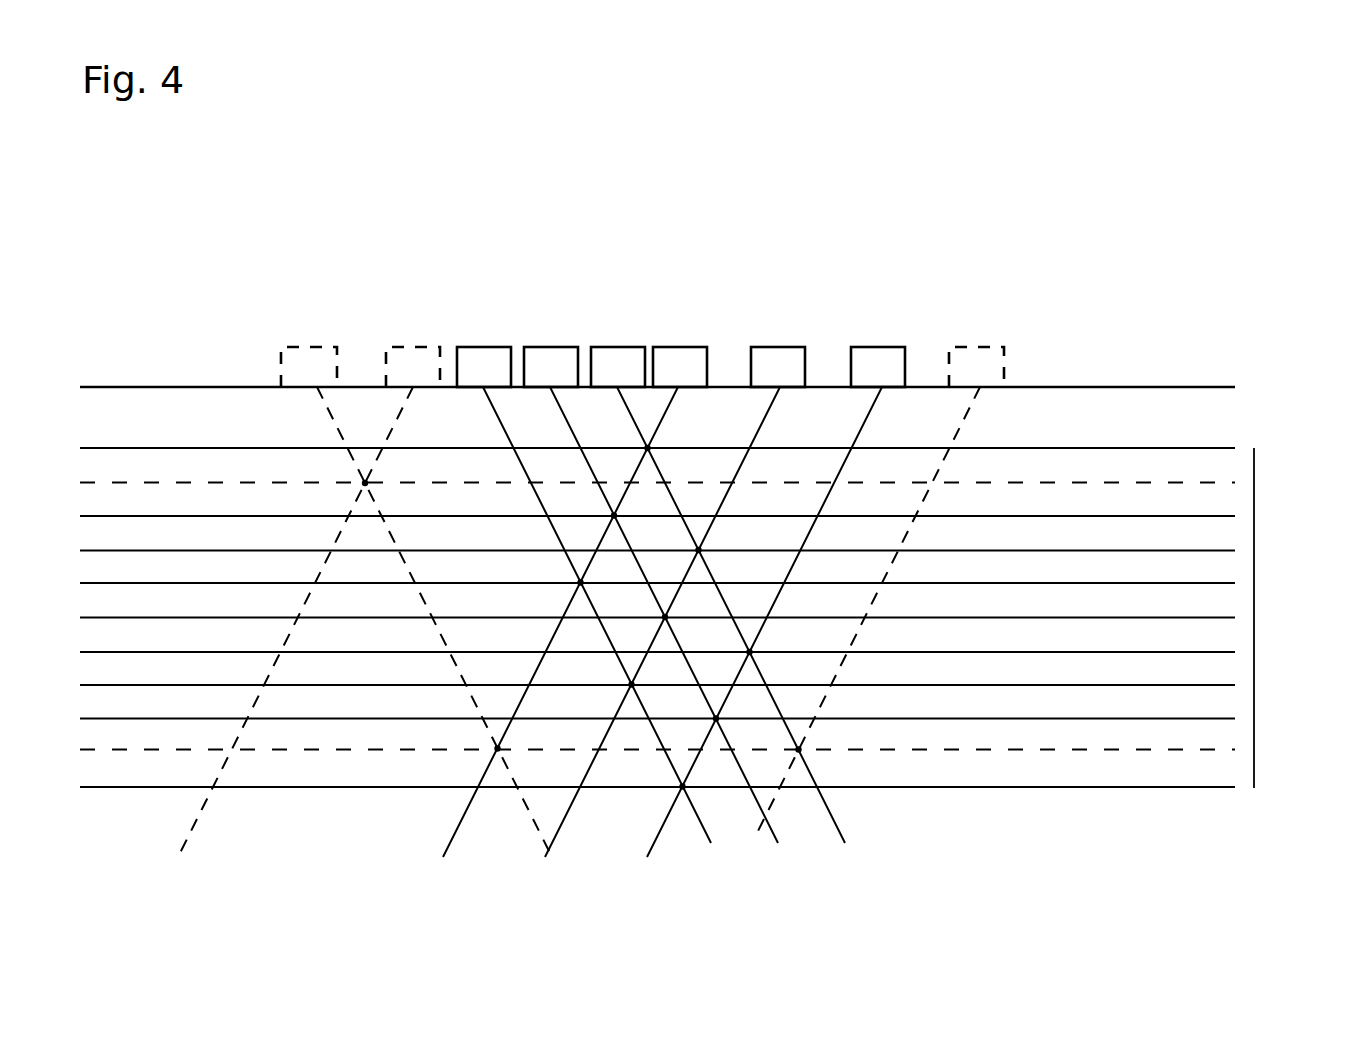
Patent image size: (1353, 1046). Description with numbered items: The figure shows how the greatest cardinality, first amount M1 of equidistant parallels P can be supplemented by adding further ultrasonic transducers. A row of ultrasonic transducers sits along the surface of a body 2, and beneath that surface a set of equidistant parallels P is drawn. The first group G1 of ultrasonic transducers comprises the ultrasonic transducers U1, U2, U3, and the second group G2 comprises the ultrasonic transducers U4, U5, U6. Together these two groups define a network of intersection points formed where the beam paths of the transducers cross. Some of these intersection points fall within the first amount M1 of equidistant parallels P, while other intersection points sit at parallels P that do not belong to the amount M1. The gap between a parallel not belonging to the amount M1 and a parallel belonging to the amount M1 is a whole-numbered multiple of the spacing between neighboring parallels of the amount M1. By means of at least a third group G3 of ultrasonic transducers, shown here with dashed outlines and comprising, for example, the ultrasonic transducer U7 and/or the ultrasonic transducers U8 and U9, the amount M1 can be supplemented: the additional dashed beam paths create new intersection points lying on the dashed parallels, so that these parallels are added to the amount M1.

The object / test body 2 is at (1137, 382).
The equidistant parallels P is at (1215, 482).
The first amount of equidistant parallels M1 is at (1286, 618).
The first group of ultrasonic transducers G1 is at (549, 280).
The second group of ultrasonic transducers G2 is at (792, 280).
The third group of ultrasonic transducers G3 is at (348, 293).
The ultrasonic transducer U1 is at (584, 574).
The ultrasonic transducer U2 is at (651, 574).
The ultrasonic transducer U3 is at (718, 574).
The ultrasonic transducer U4 is at (575, 581).
The ultrasonic transducer U5 is at (675, 581).
The ultrasonic transducer U6 is at (776, 581).
The ultrasonic transducer U7 is at (881, 569).
The ultrasonic transducer U8 is at (416, 580).
The ultrasonic transducer U9 is at (309, 580).